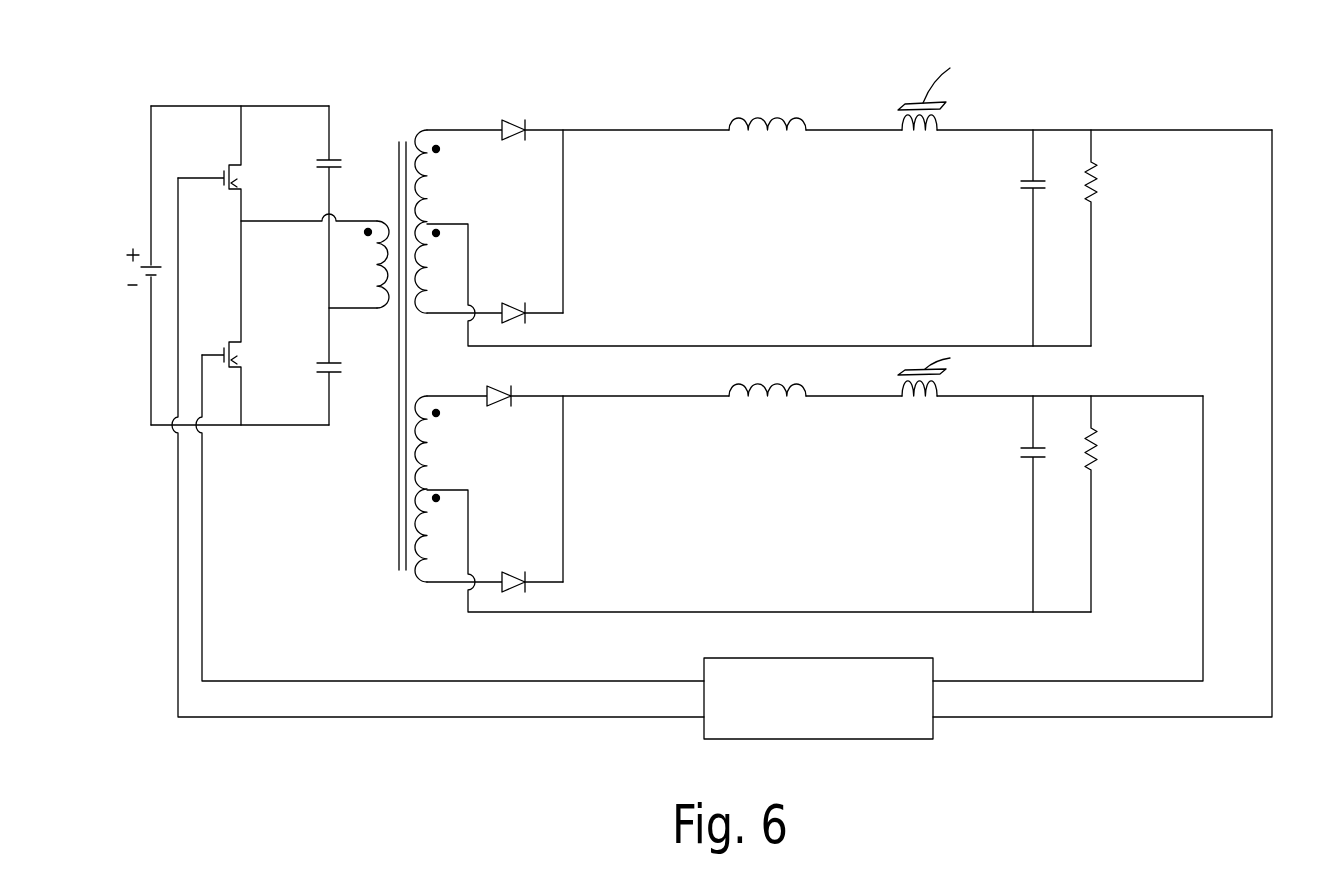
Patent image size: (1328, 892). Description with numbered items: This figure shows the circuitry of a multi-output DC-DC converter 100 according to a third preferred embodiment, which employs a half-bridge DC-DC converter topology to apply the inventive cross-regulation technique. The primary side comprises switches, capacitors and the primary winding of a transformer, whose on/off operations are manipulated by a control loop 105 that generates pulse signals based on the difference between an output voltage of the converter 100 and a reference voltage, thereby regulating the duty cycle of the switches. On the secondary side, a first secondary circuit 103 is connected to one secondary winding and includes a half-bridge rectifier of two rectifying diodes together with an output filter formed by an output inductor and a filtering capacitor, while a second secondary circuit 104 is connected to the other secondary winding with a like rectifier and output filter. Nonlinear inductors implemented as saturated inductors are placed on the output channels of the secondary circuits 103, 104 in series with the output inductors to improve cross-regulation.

The multi-output DC-DC converter 100 is at (1320, 82).
The first secondary circuit 103 is at (553, 120).
The second secondary circuit 104 is at (553, 388).
The control loop 105 is at (714, 672).